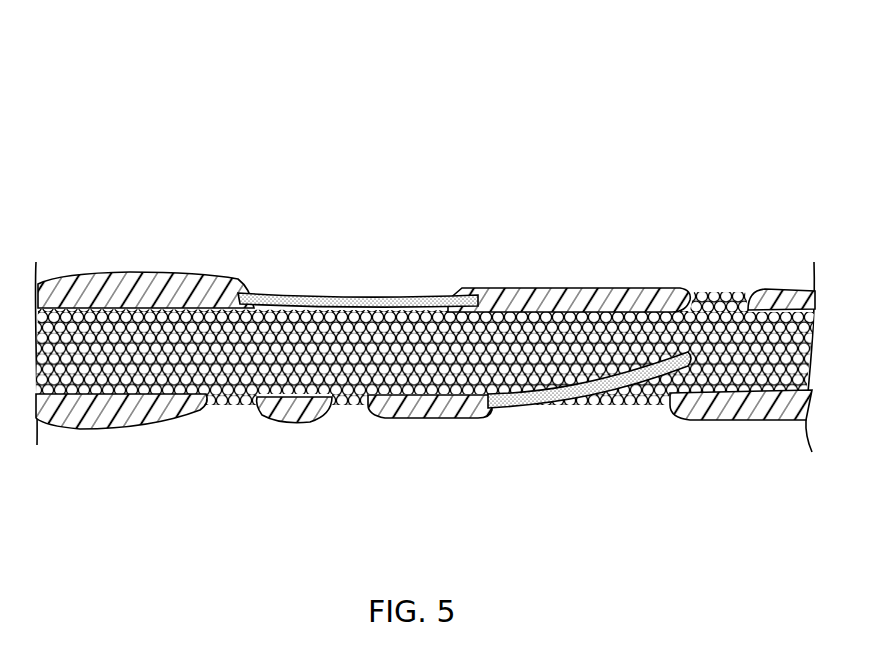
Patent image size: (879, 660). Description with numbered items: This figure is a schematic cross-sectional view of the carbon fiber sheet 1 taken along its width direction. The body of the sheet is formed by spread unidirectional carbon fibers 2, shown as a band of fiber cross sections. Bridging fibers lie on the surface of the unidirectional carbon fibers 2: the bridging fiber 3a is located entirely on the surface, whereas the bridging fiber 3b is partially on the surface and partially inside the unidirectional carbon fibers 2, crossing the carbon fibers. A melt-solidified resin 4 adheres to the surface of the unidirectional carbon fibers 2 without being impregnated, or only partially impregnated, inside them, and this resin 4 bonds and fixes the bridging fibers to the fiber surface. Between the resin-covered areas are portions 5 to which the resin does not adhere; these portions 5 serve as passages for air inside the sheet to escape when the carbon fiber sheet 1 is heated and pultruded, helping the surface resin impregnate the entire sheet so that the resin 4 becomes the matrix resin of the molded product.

The carbon fiber sheet 1 is at (156, 110).
The unidirectional carbon fibers 2 is at (769, 291).
The bridging fiber 3a is at (353, 296).
The bridging fiber 3b is at (598, 410).
The resin 4 is at (565, 290).
The portions to which the resin does not adhere 5 is at (748, 291).